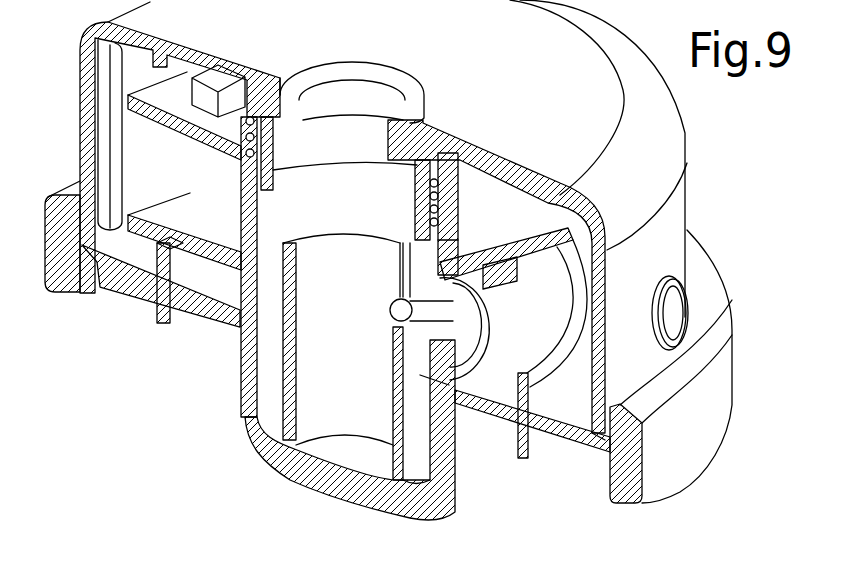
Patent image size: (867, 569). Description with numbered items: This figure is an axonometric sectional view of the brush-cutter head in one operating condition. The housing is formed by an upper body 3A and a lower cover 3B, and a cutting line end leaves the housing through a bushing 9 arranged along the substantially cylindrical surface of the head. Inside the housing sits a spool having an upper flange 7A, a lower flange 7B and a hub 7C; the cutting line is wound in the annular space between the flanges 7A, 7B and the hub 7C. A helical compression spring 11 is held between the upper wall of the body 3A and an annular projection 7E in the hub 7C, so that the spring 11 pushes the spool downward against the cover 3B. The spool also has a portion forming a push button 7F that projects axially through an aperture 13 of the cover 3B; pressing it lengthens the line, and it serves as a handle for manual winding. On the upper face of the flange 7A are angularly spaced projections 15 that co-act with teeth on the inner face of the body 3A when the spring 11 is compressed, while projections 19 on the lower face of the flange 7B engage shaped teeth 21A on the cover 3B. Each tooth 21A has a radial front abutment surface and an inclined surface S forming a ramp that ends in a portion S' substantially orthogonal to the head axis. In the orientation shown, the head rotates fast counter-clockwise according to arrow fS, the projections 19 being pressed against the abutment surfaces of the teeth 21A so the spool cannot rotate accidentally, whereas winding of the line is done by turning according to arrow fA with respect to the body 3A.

The body 3A is at (670, 143).
The cover 3B is at (653, 483).
The bushing 9 is at (677, 312).
The flange 7A is at (187, 117).
The flange 7B is at (147, 220).
The hub 7C is at (240, 190).
The annular projection 7E is at (258, 165).
The push button 7F is at (343, 490).
The helical compression spring 11 is at (470, 187).
The aperture 13 is at (243, 353).
The projections 15 is at (216, 77).
The projections 19 is at (213, 277).
The teeth 21A is at (545, 320).
The inclined surface S is at (504, 400).
The portion S' is at (611, 260).
The arrow fS is at (507, 90).
The arrow fA is at (453, 540).